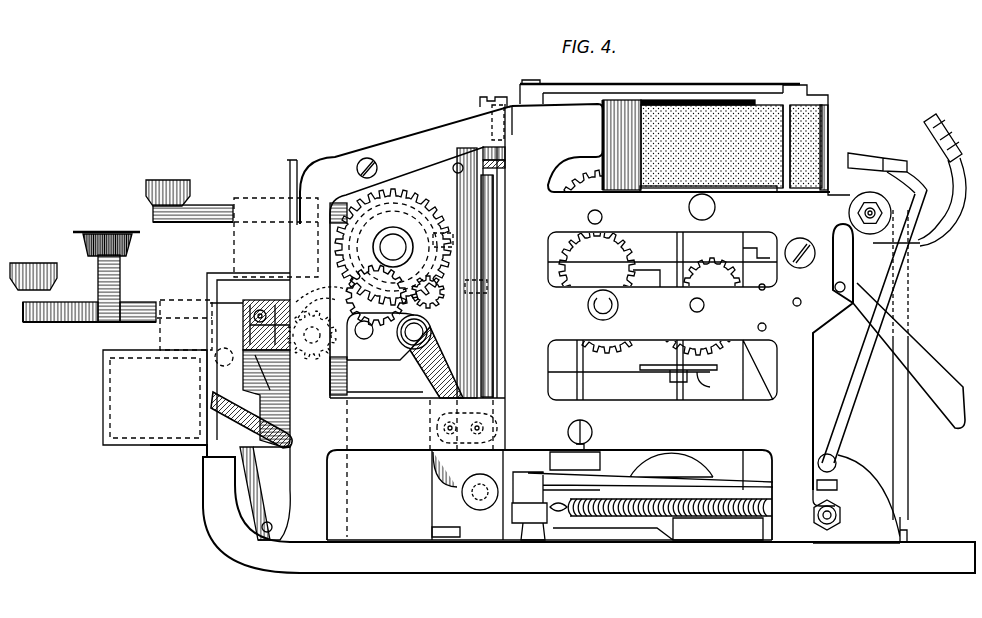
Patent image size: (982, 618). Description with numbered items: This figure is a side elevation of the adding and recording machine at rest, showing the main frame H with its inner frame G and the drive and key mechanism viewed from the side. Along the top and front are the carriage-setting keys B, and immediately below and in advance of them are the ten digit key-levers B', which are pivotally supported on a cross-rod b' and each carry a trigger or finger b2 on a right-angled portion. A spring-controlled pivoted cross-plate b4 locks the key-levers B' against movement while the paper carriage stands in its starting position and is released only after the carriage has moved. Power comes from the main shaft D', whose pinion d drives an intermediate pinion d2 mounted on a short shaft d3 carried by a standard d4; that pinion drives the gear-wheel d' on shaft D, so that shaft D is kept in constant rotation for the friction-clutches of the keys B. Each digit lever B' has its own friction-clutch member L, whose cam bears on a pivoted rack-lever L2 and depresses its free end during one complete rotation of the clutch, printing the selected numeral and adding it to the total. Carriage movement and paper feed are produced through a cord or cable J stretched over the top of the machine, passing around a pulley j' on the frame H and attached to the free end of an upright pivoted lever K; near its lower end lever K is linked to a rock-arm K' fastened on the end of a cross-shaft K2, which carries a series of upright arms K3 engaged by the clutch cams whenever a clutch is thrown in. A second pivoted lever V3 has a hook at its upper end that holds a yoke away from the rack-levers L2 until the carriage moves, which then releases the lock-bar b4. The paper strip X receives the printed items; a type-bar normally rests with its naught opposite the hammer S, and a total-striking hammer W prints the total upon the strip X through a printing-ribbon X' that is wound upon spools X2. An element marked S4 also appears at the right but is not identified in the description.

The key B is at (189, 189).
The key-lever B' is at (83, 277).
The cross-rod b' is at (258, 301).
The trigger or finger b2 is at (243, 313).
The pivoted cross-plate b4 is at (243, 376).
The friction-clutch member L is at (318, 319).
The rack-lever L2 is at (241, 401).
The shaft D is at (393, 247).
The main shaft D' is at (322, 376).
The gear-wheel d' is at (393, 247).
The intermediate pinion d2 is at (376, 295).
The short shaft d3 is at (380, 336).
The standard d4 is at (391, 370).
The pinion d is at (385, 381).
The upright pivoted lever K is at (453, 295).
The rock-arm K' is at (425, 362).
The cross-shaft K2 is at (414, 332).
The upright arm K3 is at (428, 289).
The main frame H is at (542, 477).
The cord or cable J is at (506, 170).
The pulley j' is at (512, 132).
The paper strip X is at (746, 137).
The printing-ribbon X' is at (819, 147).
The spool X2 is at (605, 128).
The total-striking hammer W is at (884, 160).
The hammer S is at (930, 125).
The rear post S4 is at (893, 440).
The inner frame G is at (687, 379).
The pivoted lever V3 is at (265, 493).